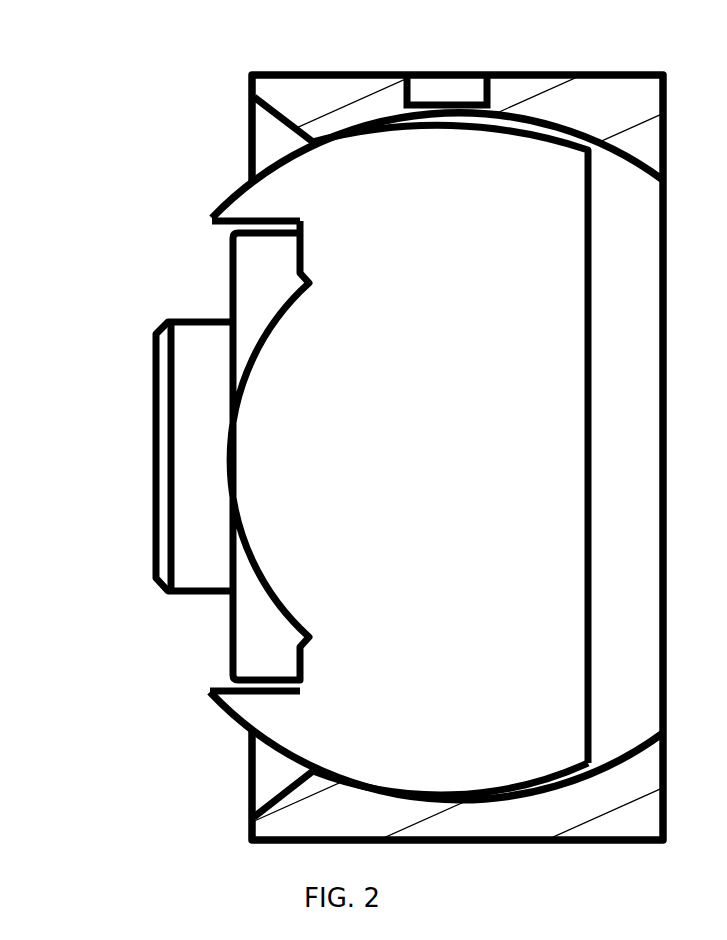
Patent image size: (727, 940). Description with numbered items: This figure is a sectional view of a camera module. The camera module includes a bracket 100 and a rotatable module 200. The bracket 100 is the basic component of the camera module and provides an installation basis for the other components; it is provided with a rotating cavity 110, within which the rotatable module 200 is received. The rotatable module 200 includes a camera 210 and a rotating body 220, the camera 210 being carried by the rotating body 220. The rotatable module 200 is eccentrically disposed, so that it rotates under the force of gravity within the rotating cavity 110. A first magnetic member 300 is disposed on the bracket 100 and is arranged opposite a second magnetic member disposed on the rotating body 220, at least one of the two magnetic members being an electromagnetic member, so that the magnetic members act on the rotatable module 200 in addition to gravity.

The bracket 100 is at (598, 112).
The rotating cavity 110 is at (343, 120).
The rotatable module 200 is at (198, 450).
The camera 210 is at (195, 530).
The rotating body 220 is at (375, 600).
The first magnetic member 300 is at (447, 88).